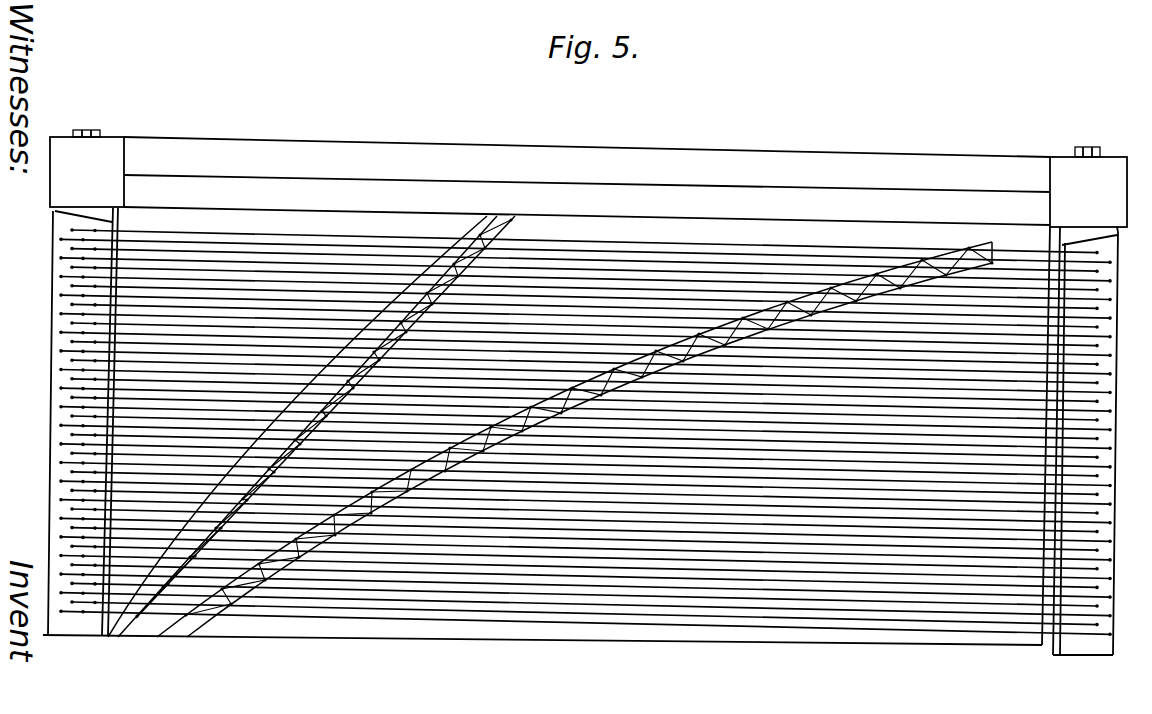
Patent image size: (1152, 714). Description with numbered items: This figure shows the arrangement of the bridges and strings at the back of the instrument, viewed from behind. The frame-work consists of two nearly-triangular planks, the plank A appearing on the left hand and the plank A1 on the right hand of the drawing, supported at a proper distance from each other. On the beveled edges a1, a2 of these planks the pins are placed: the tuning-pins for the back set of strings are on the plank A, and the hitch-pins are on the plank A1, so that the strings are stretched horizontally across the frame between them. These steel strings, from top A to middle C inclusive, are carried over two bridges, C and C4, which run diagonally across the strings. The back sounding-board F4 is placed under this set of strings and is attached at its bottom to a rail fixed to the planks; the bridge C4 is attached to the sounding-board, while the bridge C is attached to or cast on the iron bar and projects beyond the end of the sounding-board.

The plank A is at (53, 471).
The plank A1 is at (1115, 372).
The beveled edge a1 is at (64, 420).
The beveled edge a2 is at (1105, 502).
The bridge C is at (311, 426).
The bridge C4 is at (574, 439).
The back sounding-board F4 is at (585, 432).